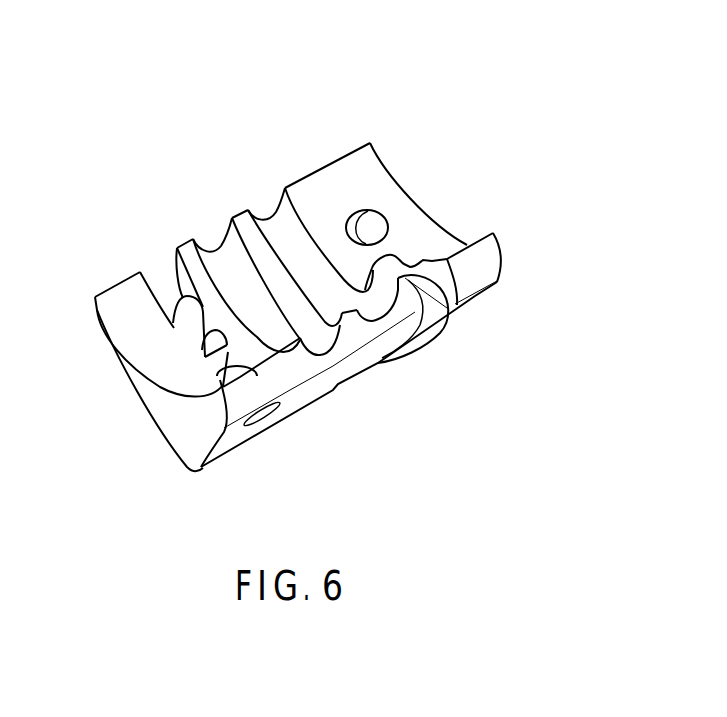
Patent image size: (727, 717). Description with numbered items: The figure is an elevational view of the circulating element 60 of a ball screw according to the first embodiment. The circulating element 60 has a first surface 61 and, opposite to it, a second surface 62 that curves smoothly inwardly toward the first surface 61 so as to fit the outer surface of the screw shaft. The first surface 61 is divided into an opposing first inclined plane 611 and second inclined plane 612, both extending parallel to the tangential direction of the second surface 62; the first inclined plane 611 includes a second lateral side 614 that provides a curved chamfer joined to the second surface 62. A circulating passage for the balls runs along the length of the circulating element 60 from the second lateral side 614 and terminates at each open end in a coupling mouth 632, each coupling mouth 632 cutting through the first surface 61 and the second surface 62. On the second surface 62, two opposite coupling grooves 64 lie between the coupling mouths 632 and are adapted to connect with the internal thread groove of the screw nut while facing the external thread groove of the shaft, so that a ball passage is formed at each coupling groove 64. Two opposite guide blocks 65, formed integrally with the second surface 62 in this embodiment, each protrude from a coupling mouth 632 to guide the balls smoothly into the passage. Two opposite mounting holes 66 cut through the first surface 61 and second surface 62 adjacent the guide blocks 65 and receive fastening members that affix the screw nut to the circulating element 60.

The circulating element 60 is at (182, 92).
The first surface 61 is at (66, 482).
The first inclined plane 611 is at (213, 447).
The second inclined plane 612 is at (147, 413).
The second lateral side 614 is at (353, 332).
The second surface 62 is at (170, 360).
The coupling mouth 632 is at (163, 282).
The coupling groove 64 is at (223, 258).
The guide block 65 is at (190, 324).
The mounting hole 66 is at (360, 230).